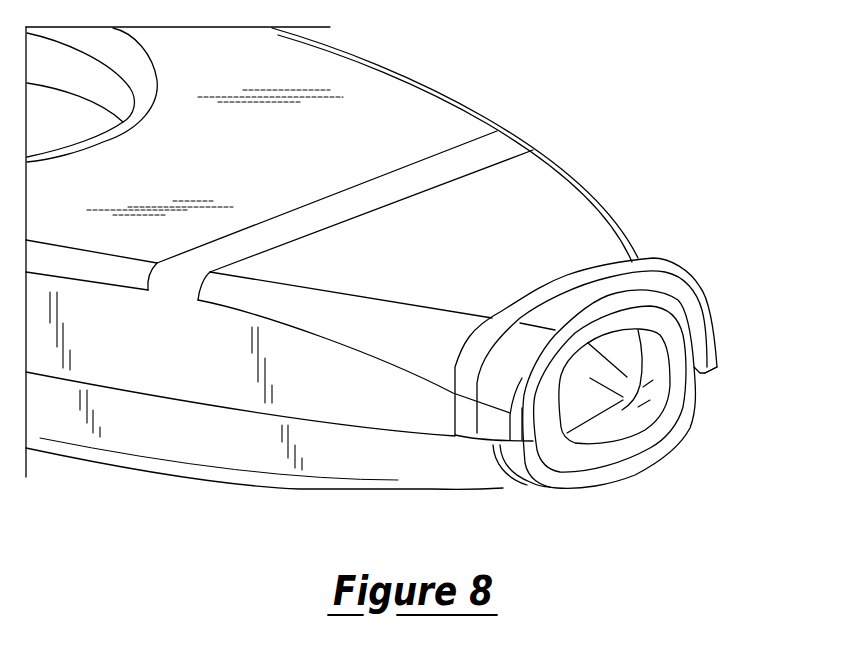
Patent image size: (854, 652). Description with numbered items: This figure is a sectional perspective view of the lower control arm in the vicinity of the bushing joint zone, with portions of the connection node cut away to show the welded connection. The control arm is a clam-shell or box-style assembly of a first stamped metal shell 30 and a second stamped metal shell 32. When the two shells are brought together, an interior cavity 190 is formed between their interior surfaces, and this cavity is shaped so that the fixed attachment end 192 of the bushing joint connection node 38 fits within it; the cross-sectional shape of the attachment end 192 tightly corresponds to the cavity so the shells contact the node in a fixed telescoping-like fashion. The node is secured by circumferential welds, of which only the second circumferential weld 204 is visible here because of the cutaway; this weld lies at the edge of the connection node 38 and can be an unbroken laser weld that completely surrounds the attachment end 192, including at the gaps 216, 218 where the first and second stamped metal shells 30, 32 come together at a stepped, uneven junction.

The first stamped metal shell 30 is at (338, 357).
The second stamped metal shell 32 is at (240, 457).
The second circumferential weld 204 is at (620, 265).
The gap 216 is at (693, 342).
The bushing joint connection node 38 is at (680, 402).
The interior cavity 190 is at (608, 403).
The fixed attachment end 192 is at (593, 458).
The gap 218 is at (525, 408).